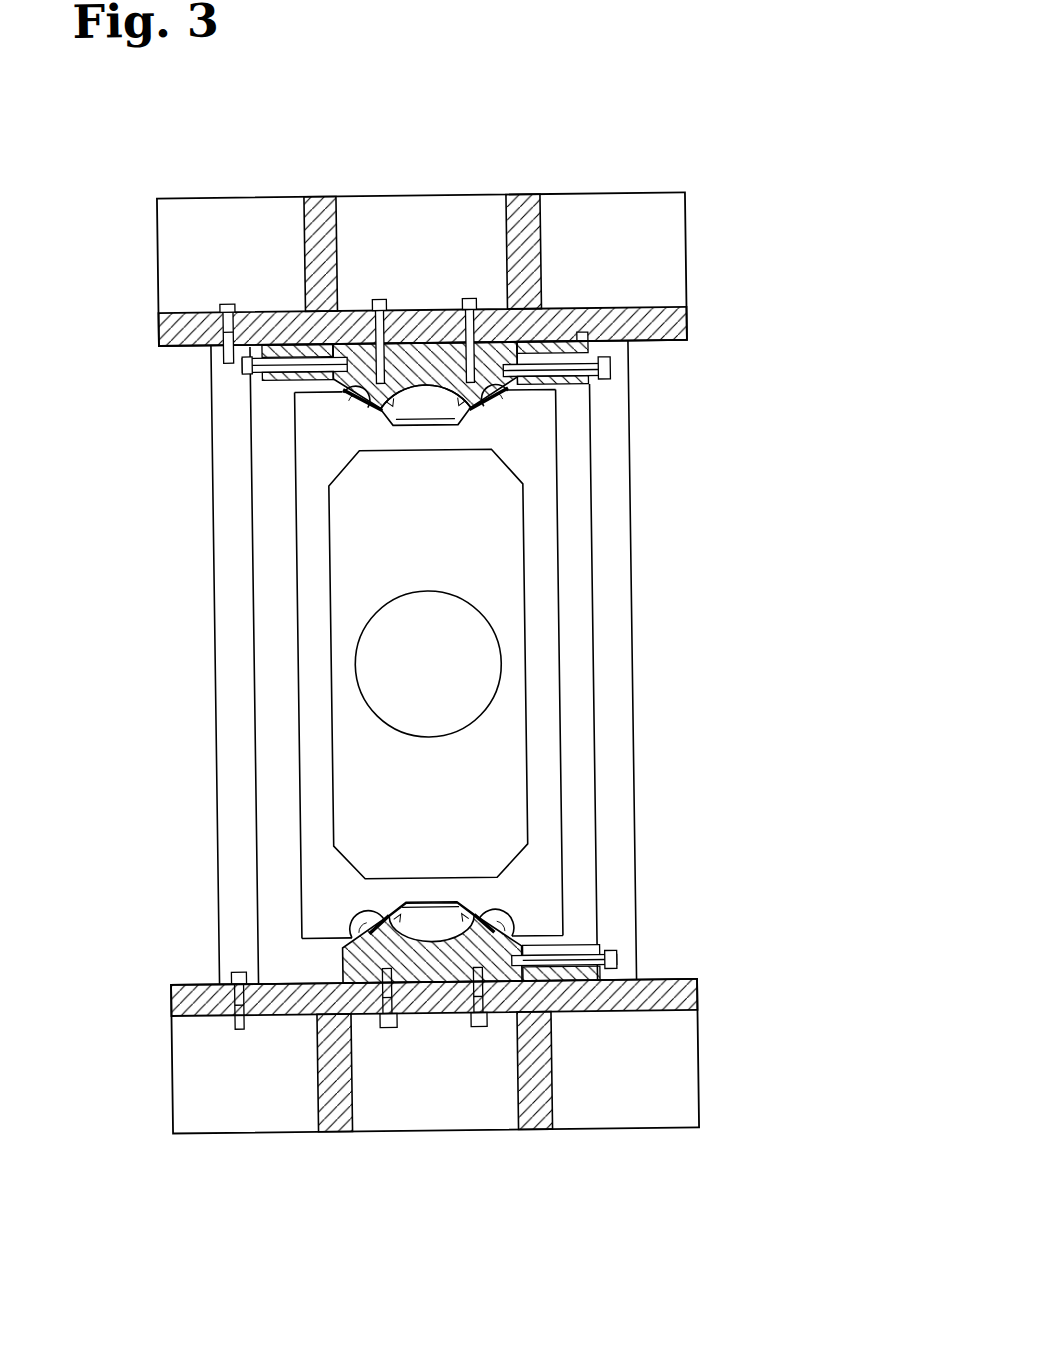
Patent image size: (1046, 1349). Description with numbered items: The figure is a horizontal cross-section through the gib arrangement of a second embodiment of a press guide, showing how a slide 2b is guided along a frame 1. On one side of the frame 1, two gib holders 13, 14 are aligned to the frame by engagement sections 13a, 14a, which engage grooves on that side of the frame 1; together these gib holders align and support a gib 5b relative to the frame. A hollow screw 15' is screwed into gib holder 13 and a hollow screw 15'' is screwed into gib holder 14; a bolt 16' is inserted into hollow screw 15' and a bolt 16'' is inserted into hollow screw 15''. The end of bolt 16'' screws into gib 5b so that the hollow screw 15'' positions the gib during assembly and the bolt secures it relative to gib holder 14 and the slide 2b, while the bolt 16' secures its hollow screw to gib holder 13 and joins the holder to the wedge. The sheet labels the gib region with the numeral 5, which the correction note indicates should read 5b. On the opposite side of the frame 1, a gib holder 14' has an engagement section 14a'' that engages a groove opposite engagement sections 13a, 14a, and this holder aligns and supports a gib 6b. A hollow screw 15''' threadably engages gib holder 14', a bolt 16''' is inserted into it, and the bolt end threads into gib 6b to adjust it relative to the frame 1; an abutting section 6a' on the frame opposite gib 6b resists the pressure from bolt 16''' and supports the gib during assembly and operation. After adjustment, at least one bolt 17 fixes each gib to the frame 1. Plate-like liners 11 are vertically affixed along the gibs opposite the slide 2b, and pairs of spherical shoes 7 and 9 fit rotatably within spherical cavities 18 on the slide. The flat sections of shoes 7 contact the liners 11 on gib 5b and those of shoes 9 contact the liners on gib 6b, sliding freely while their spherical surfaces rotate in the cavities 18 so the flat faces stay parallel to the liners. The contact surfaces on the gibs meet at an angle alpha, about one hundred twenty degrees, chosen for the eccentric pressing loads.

The frame 1 is at (318, 211).
The slide 2b is at (534, 566).
The gib 5 is at (424, 400).
The gib 5b is at (490, 349).
The abutting section 6a' is at (435, 1090).
The gib 6b is at (407, 958).
The spherical shoe 7 is at (492, 404).
The spherical shoe 9 is at (495, 913).
The liner 11 is at (480, 397).
The gib holder 13 is at (285, 346).
The engagement section 13a is at (263, 345).
The gib holder 14 is at (580, 235).
The engagement section 14a is at (473, 288).
The gib holder 14' is at (663, 945).
The engagement section 14a'' is at (496, 1037).
The hollow screw 15' is at (204, 413).
The hollow screw 15'' is at (648, 342).
The hollow screw 15''' is at (657, 857).
The bolt 16' is at (196, 388).
The bolt 16'' is at (655, 383).
The bolt 16''' is at (666, 890).
The bolt 17 is at (376, 304).
The spherical cavity 18 is at (494, 416).